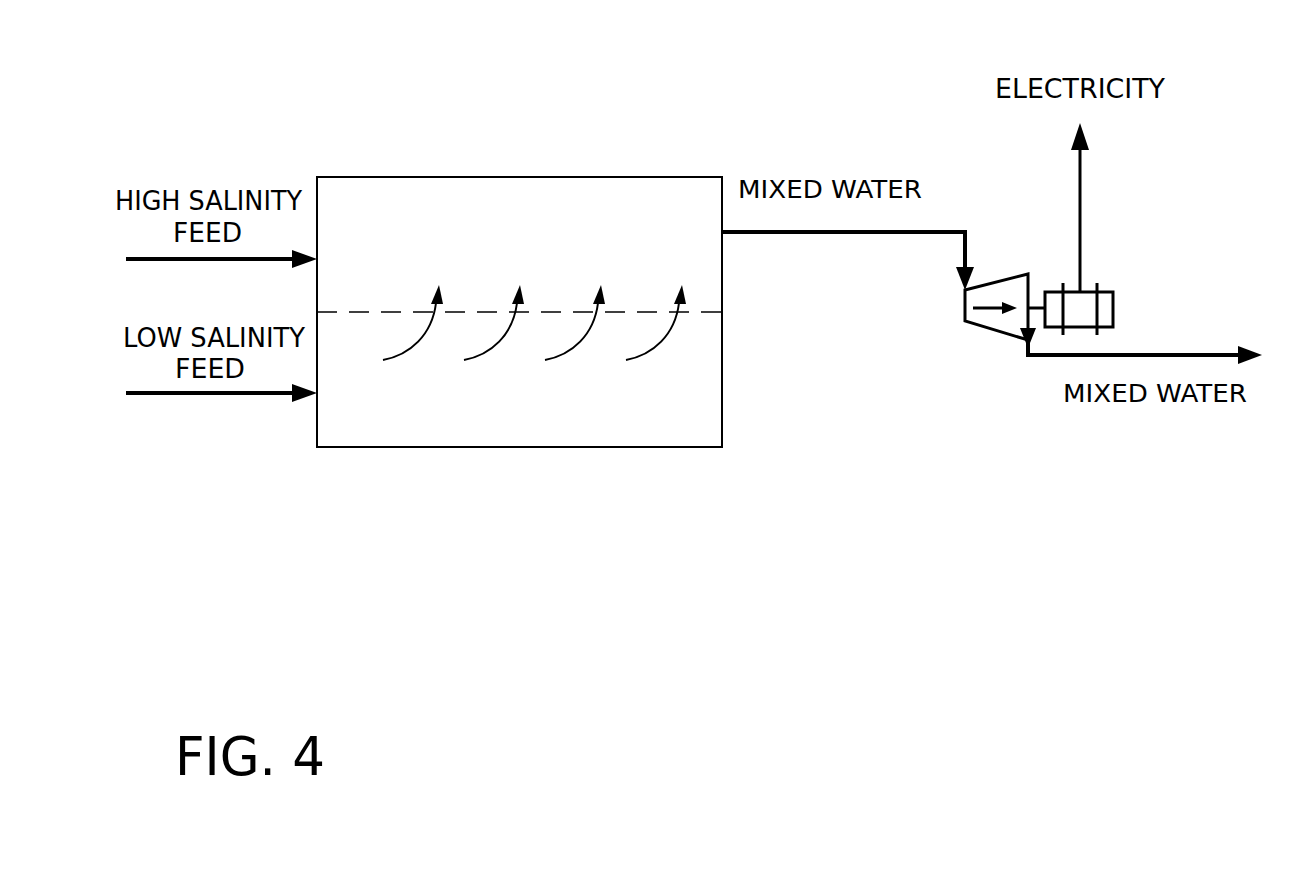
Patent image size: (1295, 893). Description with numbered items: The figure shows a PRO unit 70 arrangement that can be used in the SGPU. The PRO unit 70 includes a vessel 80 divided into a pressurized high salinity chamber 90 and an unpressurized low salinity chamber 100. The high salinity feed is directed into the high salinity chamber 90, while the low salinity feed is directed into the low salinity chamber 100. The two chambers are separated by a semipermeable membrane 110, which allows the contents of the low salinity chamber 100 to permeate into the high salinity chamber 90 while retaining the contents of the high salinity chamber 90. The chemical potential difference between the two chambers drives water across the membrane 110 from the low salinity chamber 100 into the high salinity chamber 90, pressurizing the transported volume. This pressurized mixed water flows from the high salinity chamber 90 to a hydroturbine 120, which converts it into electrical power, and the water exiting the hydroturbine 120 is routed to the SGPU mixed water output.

The PRO unit 70 is at (195, 83).
The vessel 80 is at (490, 176).
The high salinity chamber 90 is at (640, 188).
The low salinity chamber 100 is at (643, 436).
The semipermeable membrane 110 is at (695, 312).
The hydroturbine 120 is at (1113, 292).